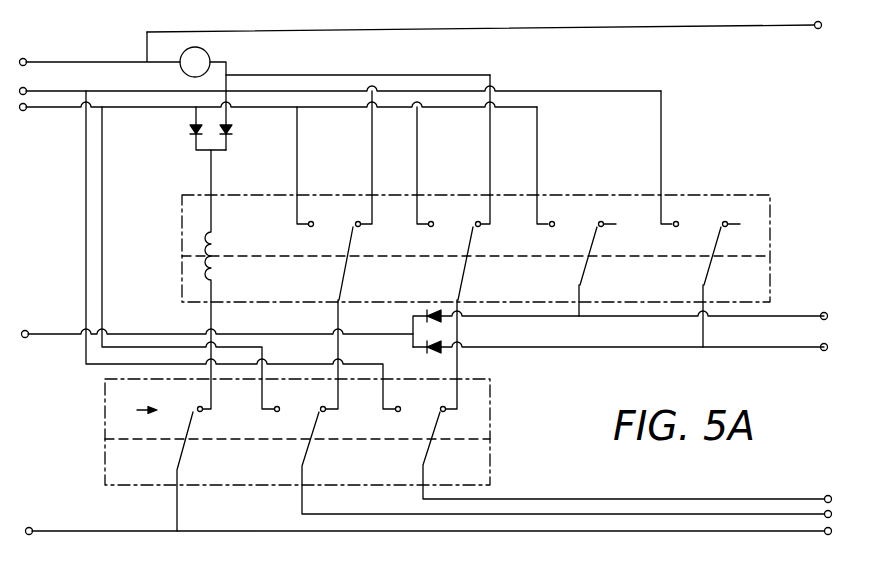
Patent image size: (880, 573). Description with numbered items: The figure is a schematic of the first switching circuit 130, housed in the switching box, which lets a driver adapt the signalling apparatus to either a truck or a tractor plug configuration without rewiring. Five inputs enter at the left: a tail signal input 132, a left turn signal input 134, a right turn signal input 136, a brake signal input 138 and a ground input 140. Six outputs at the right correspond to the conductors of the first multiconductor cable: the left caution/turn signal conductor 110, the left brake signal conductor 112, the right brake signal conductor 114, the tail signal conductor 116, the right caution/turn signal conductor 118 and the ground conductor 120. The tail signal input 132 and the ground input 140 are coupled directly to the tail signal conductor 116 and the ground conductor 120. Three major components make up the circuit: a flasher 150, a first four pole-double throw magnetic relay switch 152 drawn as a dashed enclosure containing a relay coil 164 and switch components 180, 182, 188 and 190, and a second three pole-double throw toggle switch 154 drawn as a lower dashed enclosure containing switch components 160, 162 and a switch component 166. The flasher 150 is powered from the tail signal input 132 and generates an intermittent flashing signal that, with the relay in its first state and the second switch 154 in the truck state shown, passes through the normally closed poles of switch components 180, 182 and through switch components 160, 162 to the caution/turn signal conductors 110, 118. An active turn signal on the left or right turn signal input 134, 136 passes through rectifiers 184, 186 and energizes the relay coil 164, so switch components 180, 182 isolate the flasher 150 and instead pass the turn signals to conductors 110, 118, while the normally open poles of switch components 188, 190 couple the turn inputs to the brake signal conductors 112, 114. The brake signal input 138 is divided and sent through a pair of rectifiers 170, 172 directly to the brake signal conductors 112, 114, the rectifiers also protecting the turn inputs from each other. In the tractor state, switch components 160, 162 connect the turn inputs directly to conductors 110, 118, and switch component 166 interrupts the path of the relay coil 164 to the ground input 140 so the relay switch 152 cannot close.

The left caution/turn signal conductor 110 is at (662, 513).
The left brake signal conductor 112 is at (745, 349).
The right brake signal conductor 114 is at (807, 318).
The tail signal conductor 116 is at (707, 29).
The right caution/turn signal conductor 118 is at (768, 498).
The ground conductor 120 is at (590, 529).
The first switching circuit 130 is at (703, 116).
The tail signal input 132 is at (140, 60).
The left turn signal input 134 is at (72, 90).
The right turn signal input 136 is at (62, 110).
The brake signal input 138 is at (61, 332).
The ground input 140 is at (68, 529).
The flasher 150 is at (203, 57).
The first four pole-double throw magnetic relay switch 152 is at (758, 210).
The second three pole-double throw toggle switch 154 is at (472, 449).
The switch component 160 is at (284, 417).
The switch component 162 is at (414, 412).
The relay coil 164 is at (208, 253).
The switch component 166 is at (149, 421).
The rectifier 170 is at (432, 314).
The rectifier 172 is at (432, 347).
The first switch component 180 is at (329, 238).
The second switch component 182 is at (453, 233).
The rectifier 184 is at (189, 131).
The rectifier 186 is at (232, 131).
The switch component 188 is at (581, 232).
The switch component 190 is at (699, 234).